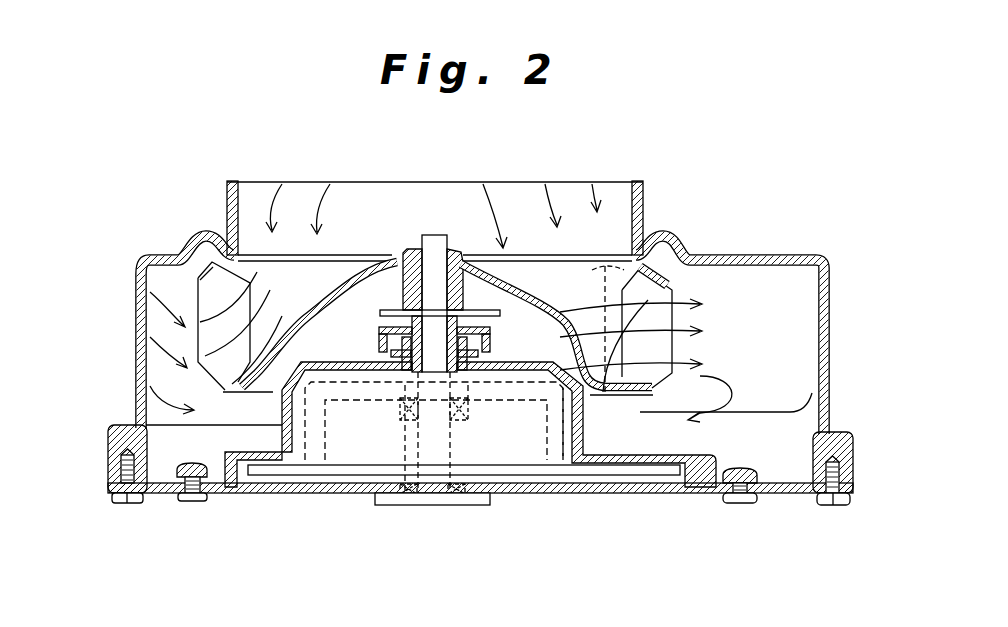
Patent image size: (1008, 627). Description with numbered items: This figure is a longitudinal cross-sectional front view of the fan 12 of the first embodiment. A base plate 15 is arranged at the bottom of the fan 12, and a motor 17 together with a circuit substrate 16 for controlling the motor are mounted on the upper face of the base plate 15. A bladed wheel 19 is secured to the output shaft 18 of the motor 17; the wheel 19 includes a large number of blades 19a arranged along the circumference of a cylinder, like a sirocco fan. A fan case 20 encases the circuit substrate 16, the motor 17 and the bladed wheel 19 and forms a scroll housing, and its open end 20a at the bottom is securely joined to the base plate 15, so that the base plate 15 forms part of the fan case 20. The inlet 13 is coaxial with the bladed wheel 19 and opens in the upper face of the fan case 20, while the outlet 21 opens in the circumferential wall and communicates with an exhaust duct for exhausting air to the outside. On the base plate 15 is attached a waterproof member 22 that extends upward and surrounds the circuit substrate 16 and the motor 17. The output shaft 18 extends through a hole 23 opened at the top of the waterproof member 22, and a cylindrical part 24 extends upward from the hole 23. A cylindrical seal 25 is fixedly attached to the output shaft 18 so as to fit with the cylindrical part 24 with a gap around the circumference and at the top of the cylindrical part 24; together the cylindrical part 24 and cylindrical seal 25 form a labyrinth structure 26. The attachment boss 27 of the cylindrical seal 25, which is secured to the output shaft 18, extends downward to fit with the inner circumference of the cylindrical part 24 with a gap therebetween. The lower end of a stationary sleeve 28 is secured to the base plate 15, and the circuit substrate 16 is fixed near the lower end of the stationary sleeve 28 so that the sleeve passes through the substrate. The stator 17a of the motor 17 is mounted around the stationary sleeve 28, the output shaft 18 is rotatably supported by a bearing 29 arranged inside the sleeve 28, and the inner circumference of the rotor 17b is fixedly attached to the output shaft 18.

The fan 12 is at (128, 263).
The inlet 13 is at (419, 188).
The base plate 15 is at (330, 496).
The circuit substrate 16 is at (630, 474).
The motor 17 is at (612, 553).
The stator 17a is at (517, 448).
The rotor 17b is at (557, 454).
The output shaft 18 is at (447, 236).
The bladed wheel 19 is at (545, 297).
The blades 19a is at (160, 307).
The fan case 20 is at (136, 350).
The open end 20a is at (157, 492).
The outlet 21 is at (818, 345).
The waterproof member 22 is at (146, 424).
The hole 23 is at (413, 378).
The cylindrical part 24 is at (480, 356).
The cylindrical seal 25 is at (491, 328).
The labyrinth structure 26 is at (386, 358).
The attachment boss 27 is at (385, 300).
The stationary sleeve 28 is at (477, 505).
The bearing 29 is at (397, 505).